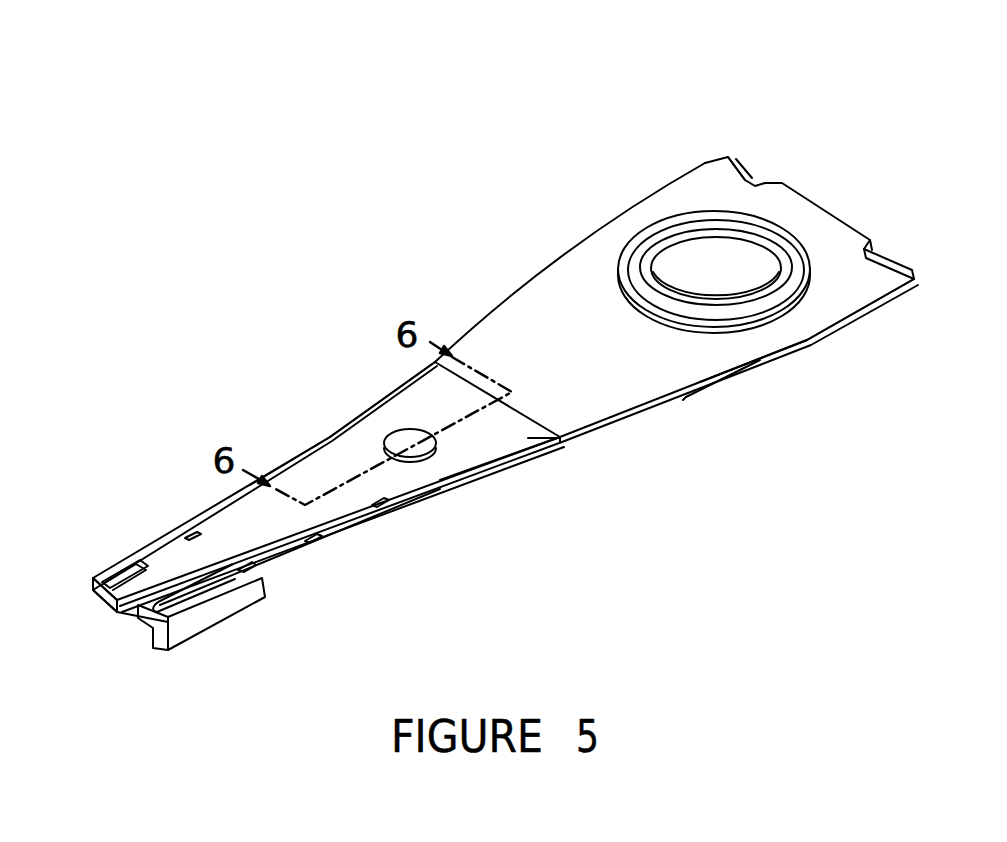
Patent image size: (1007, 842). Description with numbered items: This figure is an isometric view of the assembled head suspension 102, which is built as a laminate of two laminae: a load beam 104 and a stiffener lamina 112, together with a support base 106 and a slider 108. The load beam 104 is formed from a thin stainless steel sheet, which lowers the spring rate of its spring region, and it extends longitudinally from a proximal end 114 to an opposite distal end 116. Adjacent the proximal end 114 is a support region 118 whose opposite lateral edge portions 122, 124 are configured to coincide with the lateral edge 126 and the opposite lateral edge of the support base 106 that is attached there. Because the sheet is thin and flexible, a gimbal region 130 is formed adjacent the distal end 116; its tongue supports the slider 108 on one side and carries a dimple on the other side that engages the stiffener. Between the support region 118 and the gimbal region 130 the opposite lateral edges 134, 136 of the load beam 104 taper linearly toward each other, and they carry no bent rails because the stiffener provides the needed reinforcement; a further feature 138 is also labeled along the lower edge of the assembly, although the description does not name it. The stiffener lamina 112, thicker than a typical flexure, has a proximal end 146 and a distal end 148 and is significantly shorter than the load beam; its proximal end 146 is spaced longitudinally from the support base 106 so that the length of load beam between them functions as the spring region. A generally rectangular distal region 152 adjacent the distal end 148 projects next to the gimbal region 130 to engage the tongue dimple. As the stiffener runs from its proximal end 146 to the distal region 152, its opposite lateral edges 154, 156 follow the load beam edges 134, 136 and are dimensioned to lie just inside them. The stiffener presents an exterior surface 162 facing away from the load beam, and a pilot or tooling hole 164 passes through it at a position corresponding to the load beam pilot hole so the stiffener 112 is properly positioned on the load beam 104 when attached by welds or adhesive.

The head suspension 102 is at (411, 271).
The load beam 104 is at (570, 420).
The support base 106 is at (884, 263).
The slider 108 is at (240, 595).
The stiffener lamina 112 is at (403, 483).
The proximal end 114 is at (782, 184).
The distal end 116 is at (90, 590).
The support region 118 is at (732, 355).
The lateral edge portion 122 is at (810, 340).
The lateral edge portion 124 is at (640, 200).
The lateral edge of support base 126 is at (910, 279).
The gimbal region 130 is at (159, 548).
The lateral edge of load beam 134 is at (542, 450).
The lateral edge of load beam 136 is at (370, 400).
The flexure tab 138 is at (327, 533).
The stiffener proximal end 146 is at (527, 412).
The stiffener distal end 148 is at (110, 617).
The distal region of stiffener 152 is at (148, 583).
The stiffener lateral edge 154 is at (490, 463).
The stiffener lateral edge 156 is at (310, 450).
The exterior surface of stiffener 162 is at (277, 532).
The tooling hole 164 is at (405, 436).